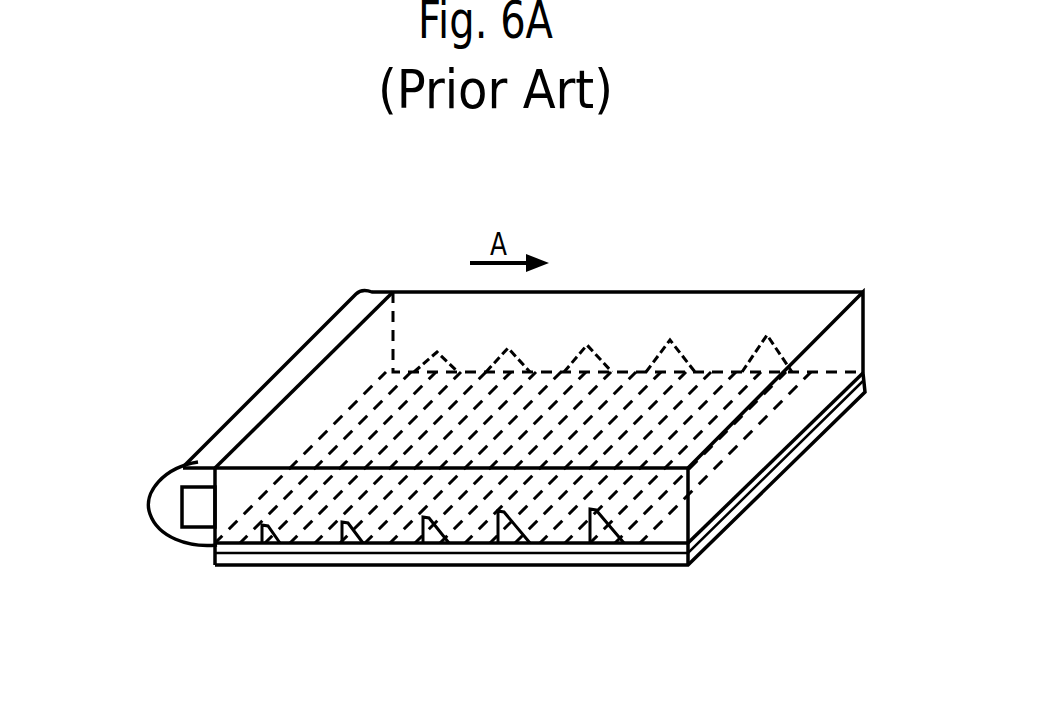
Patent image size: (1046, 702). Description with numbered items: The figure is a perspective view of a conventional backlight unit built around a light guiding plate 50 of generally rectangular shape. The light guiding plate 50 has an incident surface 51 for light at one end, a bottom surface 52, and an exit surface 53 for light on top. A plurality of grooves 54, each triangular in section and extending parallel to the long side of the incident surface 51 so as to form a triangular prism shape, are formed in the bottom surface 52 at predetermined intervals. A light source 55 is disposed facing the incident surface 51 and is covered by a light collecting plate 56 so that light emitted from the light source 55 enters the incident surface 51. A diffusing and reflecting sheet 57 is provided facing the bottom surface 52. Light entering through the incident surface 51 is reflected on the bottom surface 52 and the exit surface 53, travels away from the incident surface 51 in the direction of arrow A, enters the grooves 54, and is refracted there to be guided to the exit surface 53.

The light guiding plate 50 is at (749, 245).
The incident surface 51 is at (227, 500).
The bottom surface 52 is at (727, 474).
The exit surface 53 is at (598, 305).
The grooves 54 is at (433, 500).
The light source 55 is at (190, 527).
The light collecting plate 56 is at (163, 508).
The diffusing and reflecting sheet 57 is at (500, 556).